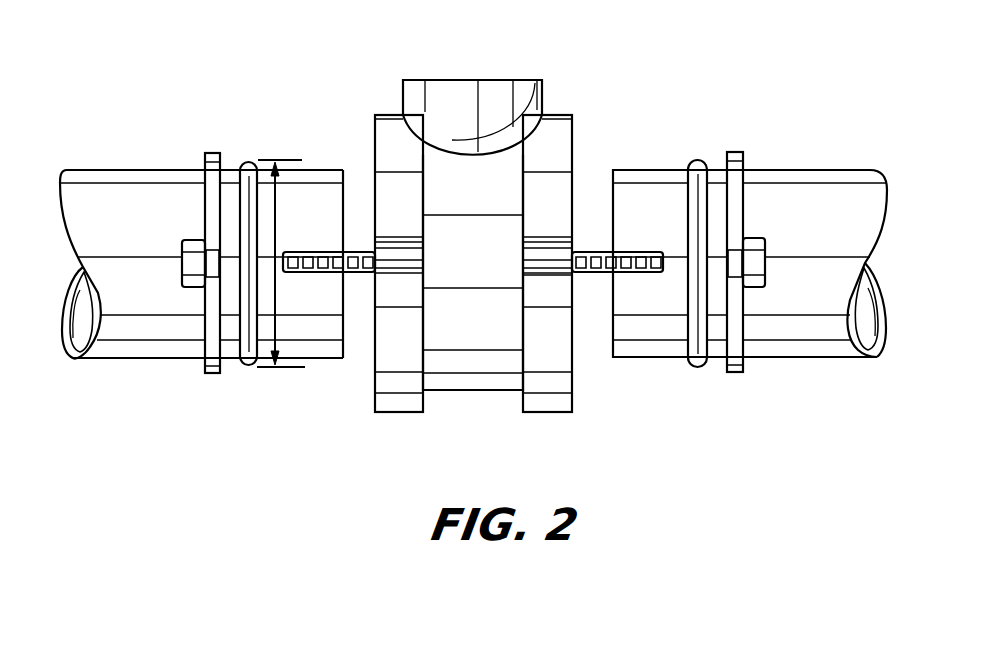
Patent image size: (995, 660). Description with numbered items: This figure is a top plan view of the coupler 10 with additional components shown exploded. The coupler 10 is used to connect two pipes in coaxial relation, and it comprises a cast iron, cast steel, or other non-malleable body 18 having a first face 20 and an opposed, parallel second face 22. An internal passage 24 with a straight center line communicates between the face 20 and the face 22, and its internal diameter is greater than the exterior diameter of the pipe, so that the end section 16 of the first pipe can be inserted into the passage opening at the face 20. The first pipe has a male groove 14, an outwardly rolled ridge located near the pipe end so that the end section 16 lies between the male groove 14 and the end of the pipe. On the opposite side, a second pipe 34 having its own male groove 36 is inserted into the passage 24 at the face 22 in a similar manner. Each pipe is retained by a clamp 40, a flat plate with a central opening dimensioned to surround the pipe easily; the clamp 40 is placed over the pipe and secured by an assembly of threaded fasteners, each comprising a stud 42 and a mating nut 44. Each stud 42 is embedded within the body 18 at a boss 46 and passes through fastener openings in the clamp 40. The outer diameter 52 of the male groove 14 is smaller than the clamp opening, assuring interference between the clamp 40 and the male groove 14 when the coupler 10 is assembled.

The coupler 10 is at (372, 57).
The male groove 14 is at (250, 163).
The end section 16 is at (648, 112).
The body 18 is at (473, 272).
The first face 20 is at (375, 148).
The second face 22 is at (577, 132).
The internal passage 24 is at (453, 85).
The second pipe 34 is at (790, 358).
The male groove 36 is at (698, 158).
The clamp 40 is at (200, 195).
The stud 42 is at (345, 250).
The nut 44 is at (182, 263).
The boss 46 is at (543, 276).
The outer diameter 52 is at (277, 205).